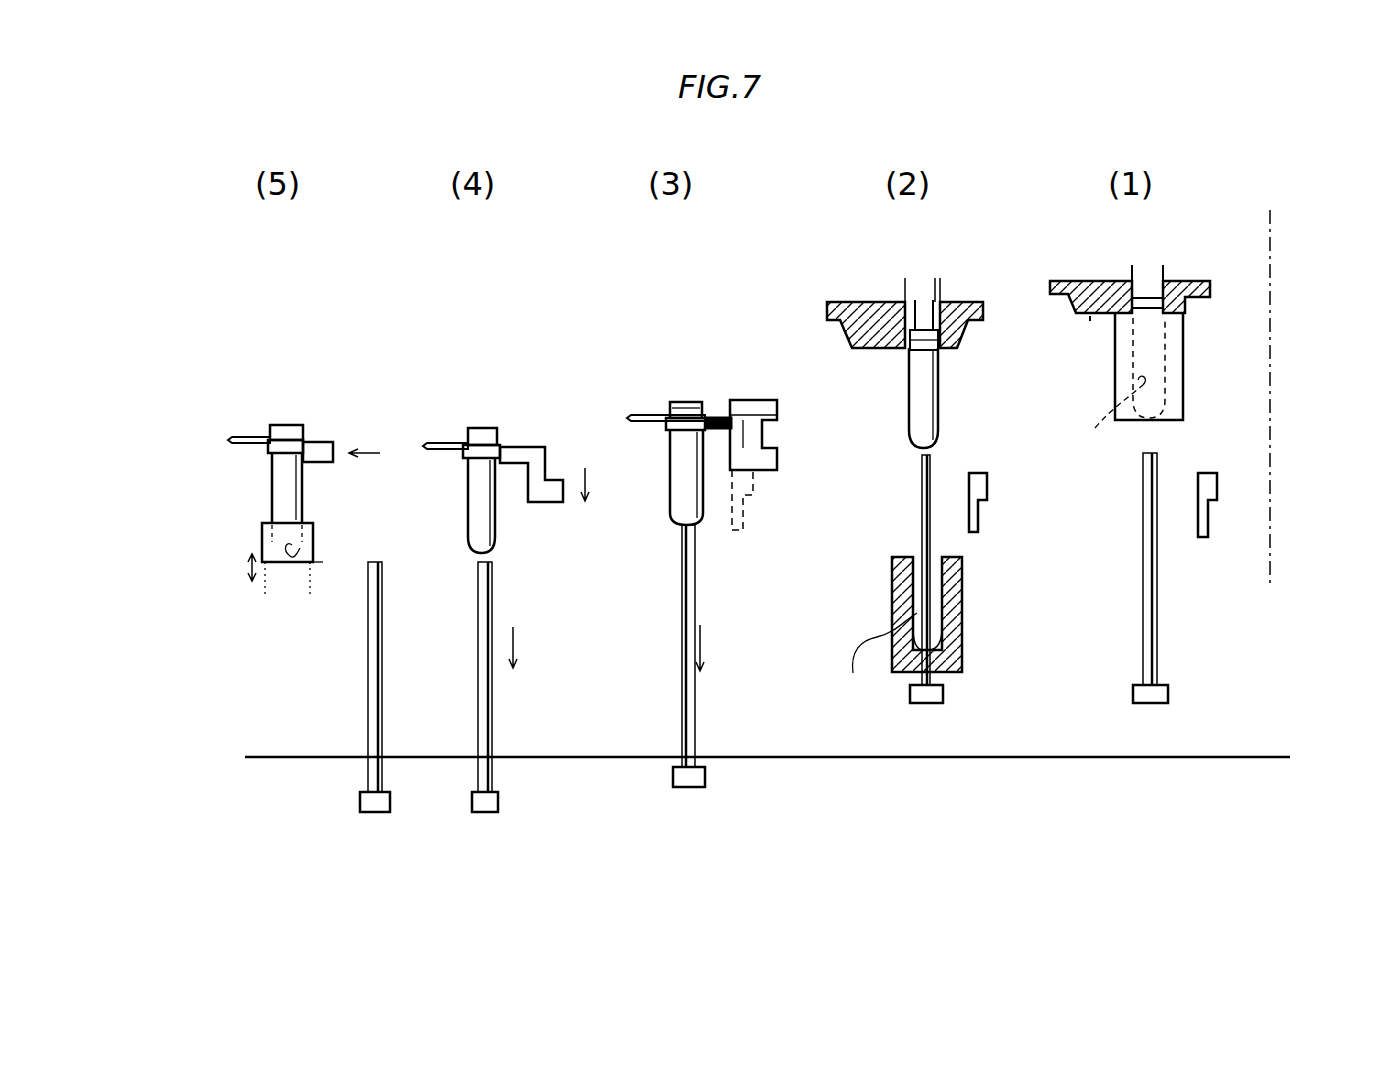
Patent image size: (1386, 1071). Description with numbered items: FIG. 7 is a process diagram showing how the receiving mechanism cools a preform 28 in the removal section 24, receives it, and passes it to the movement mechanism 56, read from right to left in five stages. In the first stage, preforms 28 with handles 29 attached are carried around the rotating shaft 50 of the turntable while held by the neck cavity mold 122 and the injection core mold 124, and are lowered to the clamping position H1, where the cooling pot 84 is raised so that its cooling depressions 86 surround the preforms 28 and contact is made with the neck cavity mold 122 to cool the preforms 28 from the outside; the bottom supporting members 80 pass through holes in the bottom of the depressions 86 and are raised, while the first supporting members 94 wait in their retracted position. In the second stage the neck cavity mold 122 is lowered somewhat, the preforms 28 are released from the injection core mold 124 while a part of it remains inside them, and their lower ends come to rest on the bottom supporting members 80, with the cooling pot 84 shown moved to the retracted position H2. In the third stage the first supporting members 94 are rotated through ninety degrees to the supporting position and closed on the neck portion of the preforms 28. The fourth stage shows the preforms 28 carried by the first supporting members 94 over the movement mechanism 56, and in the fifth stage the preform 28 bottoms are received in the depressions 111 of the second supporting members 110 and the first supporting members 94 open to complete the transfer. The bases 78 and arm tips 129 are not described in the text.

The removal section 24 is at (1097, 342).
The preform 28 is at (272, 508).
The handle 29 is at (433, 440).
The rotating shaft 50 is at (1272, 250).
The movement mechanism 56 is at (222, 572).
The base of push rod 78 is at (375, 812).
The bottom supporting member 80 is at (382, 670).
The cooling pot 84 is at (962, 620).
The cooling depression 86 is at (990, 545).
The first supporting member 94 is at (330, 440).
The second supporting member 110 is at (297, 567).
The depression 111 is at (350, 567).
The neck cavity mold 122 is at (978, 308).
The injection core mold 124 is at (927, 310).
The arm tip 129 is at (227, 433).
The cooling position H1 is at (1213, 319).
The retracted position H2 is at (993, 564).